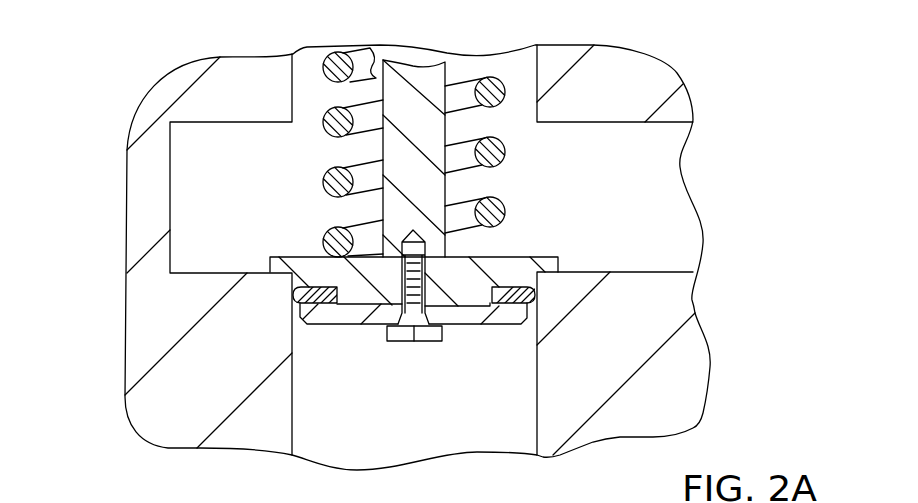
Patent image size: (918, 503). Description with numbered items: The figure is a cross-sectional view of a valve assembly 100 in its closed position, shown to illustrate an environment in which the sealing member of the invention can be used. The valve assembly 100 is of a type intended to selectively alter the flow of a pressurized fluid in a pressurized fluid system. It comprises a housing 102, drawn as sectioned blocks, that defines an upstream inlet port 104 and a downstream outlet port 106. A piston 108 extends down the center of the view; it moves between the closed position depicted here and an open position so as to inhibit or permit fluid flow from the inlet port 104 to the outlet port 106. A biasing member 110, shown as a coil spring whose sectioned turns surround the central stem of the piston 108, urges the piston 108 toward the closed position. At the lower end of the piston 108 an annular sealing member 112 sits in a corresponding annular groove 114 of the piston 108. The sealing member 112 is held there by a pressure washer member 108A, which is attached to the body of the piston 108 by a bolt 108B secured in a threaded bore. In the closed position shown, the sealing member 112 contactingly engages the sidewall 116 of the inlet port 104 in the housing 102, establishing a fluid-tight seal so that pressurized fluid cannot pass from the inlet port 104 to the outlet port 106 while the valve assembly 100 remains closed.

The valve assembly 100 is at (91, 106).
The housing 102 is at (138, 328).
The upstream inlet port 104 is at (445, 439).
The downstream outlet port 106 is at (672, 196).
The piston 108 is at (452, 337).
The pressure washer member 108A is at (522, 320).
The bolt 108B is at (403, 342).
The biasing member 110 is at (323, 177).
The annular sealing member 112 is at (513, 275).
The annular groove 114 is at (514, 308).
The sidewall 116 is at (295, 404).